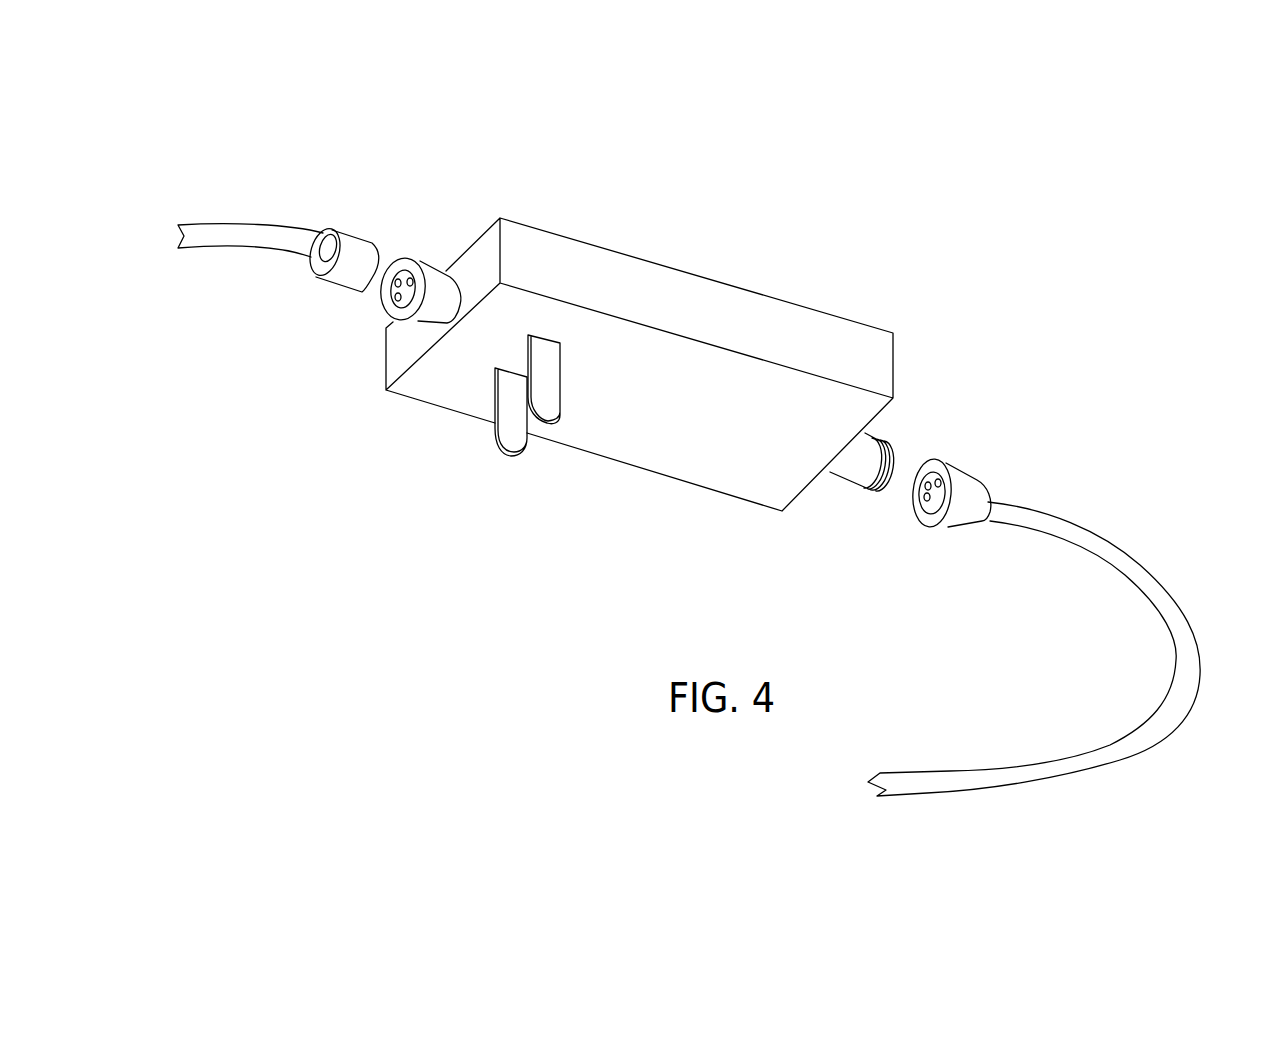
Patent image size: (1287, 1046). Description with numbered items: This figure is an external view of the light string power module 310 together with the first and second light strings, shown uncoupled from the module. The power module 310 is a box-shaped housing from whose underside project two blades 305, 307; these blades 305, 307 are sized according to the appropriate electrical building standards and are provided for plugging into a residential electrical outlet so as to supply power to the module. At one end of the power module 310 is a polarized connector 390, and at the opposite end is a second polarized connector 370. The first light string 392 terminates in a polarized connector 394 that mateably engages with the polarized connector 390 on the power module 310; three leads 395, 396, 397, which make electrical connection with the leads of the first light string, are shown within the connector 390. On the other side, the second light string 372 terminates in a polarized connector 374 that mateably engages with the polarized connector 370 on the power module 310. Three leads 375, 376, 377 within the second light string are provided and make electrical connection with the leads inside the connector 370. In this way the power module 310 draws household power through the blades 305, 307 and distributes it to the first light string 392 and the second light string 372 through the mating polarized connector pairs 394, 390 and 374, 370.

The power module 310 is at (903, 269).
The blade 305 is at (497, 418).
The blade 307 is at (550, 402).
The first light string 392 is at (367, 172).
The polarized connector 394 is at (357, 242).
The polarized connector 390 is at (393, 263).
The lead 395 is at (396, 286).
The lead 396 is at (397, 298).
The lead 397 is at (413, 283).
The polarized connector 370 is at (872, 437).
The polarized connector 374 is at (923, 458).
The lead 375 is at (926, 486).
The lead 376 is at (927, 499).
The lead 377 is at (940, 483).
The second light string 372 is at (1192, 603).